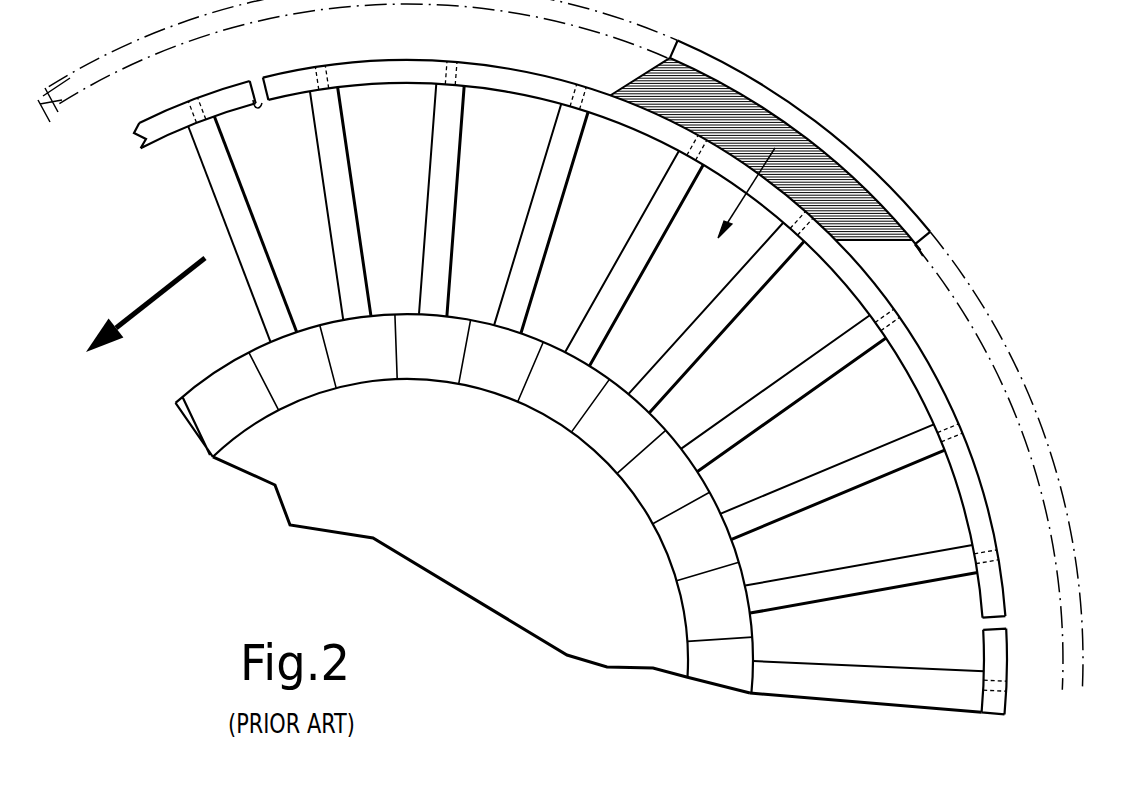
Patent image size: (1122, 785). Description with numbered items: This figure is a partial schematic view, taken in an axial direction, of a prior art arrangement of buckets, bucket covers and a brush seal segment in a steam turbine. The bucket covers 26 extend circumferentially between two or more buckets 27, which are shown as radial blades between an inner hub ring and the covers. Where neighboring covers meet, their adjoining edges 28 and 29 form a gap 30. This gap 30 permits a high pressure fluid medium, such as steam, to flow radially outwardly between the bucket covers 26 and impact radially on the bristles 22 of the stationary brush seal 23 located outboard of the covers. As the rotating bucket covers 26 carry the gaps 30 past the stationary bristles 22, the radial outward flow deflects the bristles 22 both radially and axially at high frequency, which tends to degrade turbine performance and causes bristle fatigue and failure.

The bristles 22 is at (633, 73).
The brush seal 23 is at (807, 107).
The bucket covers 26 is at (166, 122).
The buckets 27 is at (220, 182).
The adjoining edge 28 is at (256, 92).
The adjoining edge 29 is at (247, 86).
The gap 30 is at (256, 104).